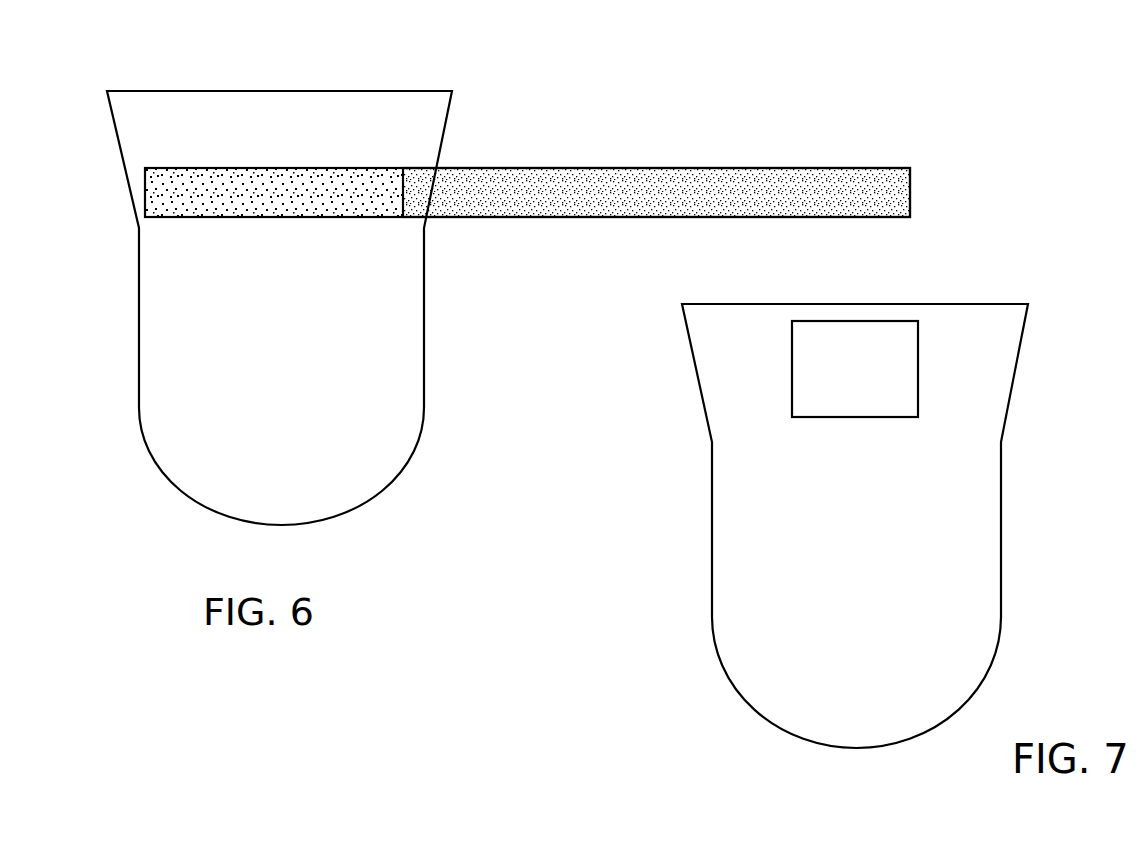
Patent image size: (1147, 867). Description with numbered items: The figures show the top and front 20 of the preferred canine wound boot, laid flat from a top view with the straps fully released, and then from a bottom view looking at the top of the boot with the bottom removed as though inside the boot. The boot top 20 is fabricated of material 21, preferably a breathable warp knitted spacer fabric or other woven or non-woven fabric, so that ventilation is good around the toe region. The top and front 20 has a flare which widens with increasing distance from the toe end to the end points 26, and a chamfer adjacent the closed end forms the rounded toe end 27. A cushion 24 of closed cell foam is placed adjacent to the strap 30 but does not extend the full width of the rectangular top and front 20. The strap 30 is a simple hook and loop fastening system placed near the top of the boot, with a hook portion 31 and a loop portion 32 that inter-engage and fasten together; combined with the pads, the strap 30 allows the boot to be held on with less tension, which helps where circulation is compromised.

In FIG. 6, the boot top 20 is at (425, 369).
In FIG. 6, the material 21 is at (288, 294).
In FIG. 7, the material 21 is at (848, 554).
In FIG. 7, the cushion 24 is at (846, 375).
In FIG. 6, the end points 26 is at (107, 91).
In FIG. 7, the end points 26 is at (682, 304).
In FIG. 6, the rounded toe end 27 is at (268, 527).
In FIG. 7, the rounded toe end 27 is at (850, 749).
In FIG. 6, the strap 30 is at (542, 190).
In FIG. 6, the hook portion 31 is at (263, 207).
In FIG. 6, the loop portion 32 is at (568, 208).